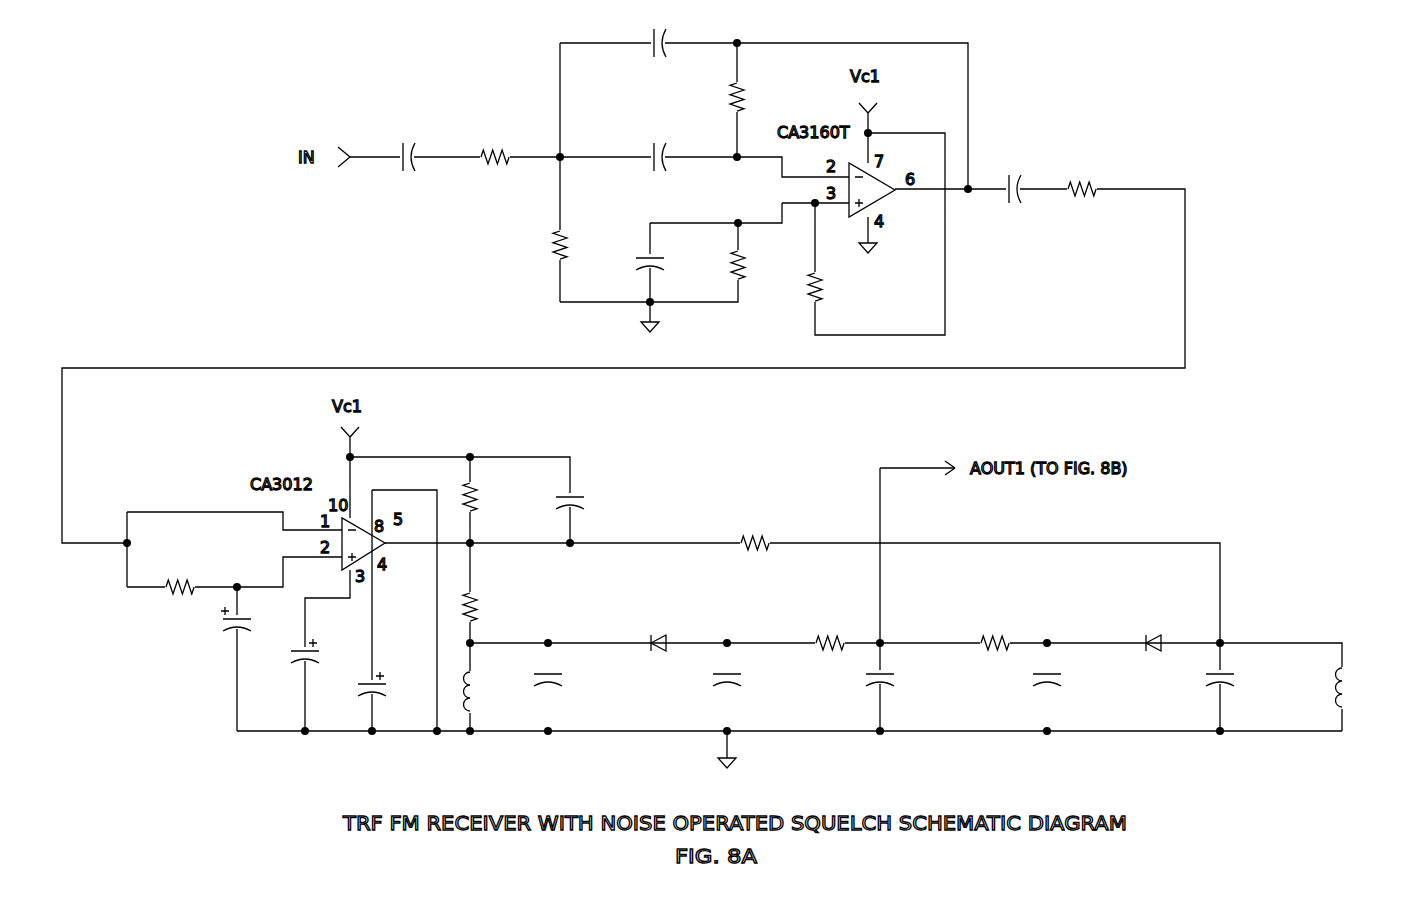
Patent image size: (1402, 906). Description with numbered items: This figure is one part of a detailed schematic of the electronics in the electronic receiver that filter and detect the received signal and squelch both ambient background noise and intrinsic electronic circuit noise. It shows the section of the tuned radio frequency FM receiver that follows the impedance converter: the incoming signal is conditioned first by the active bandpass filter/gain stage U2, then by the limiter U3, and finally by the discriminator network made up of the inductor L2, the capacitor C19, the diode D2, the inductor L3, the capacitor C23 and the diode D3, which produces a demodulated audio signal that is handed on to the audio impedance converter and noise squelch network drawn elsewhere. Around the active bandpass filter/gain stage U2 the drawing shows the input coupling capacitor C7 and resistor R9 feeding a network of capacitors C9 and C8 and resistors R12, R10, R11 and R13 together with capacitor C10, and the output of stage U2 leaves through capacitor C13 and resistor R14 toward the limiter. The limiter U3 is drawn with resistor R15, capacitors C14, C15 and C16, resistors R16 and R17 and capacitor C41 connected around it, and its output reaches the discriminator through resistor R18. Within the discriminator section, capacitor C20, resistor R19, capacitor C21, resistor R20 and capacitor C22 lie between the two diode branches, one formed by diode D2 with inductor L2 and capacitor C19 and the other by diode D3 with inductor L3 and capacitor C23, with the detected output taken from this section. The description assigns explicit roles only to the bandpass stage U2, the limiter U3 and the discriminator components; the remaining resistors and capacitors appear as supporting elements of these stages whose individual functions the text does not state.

The input coupling capacitor 0.027 C7 is at (408, 159).
The input resistor 9.1K R9 is at (493, 157).
The feedback capacitor 680pF C9 is at (657, 48).
The capacitor 680pF C8 is at (657, 162).
The feedback resistor 39K R12 is at (755, 98).
The resistor 3.3K R10 is at (581, 249).
The capacitor 0.1 C10 is at (666, 261).
The resistor 10K R11 is at (757, 264).
The resistor 10K R13 is at (833, 289).
The active bandpass filter/gain stage U2 is at (888, 194).
The coupling capacitor 0.027 C13 is at (1005, 190).
The resistor 120 R14 is at (1085, 188).
The limiter U3 is at (381, 549).
The resistor 470 R15 is at (177, 593).
The electrolytic capacitor 1uF C14 is at (255, 626).
The electrolytic capacitor 1uF C15 is at (322, 660).
The electrolytic capacitor 1uF C16 is at (388, 693).
The resistor 560 R16 is at (491, 502).
The resistor 5.1K R17 is at (493, 609).
The discriminator network inductor L2 is at (493, 692).
The capacitor 0.01 C41 is at (589, 501).
The resistor 10K R18 is at (756, 543).
The discriminator network diode D2 is at (658, 635).
The discriminator network capacitor C19 is at (577, 681).
The capacitor 0.001 C20 is at (750, 681).
The resistor 51K R19 is at (832, 643).
The capacitor 680pF C21 is at (905, 681).
The resistor 51K R20 is at (996, 643).
The capacitor 0.001 C22 is at (1070, 681).
The discriminator network diode D3 is at (1151, 635).
The discriminator network capacitor C23 is at (1248, 681).
The discriminator network inductor L3 is at (1365, 689).